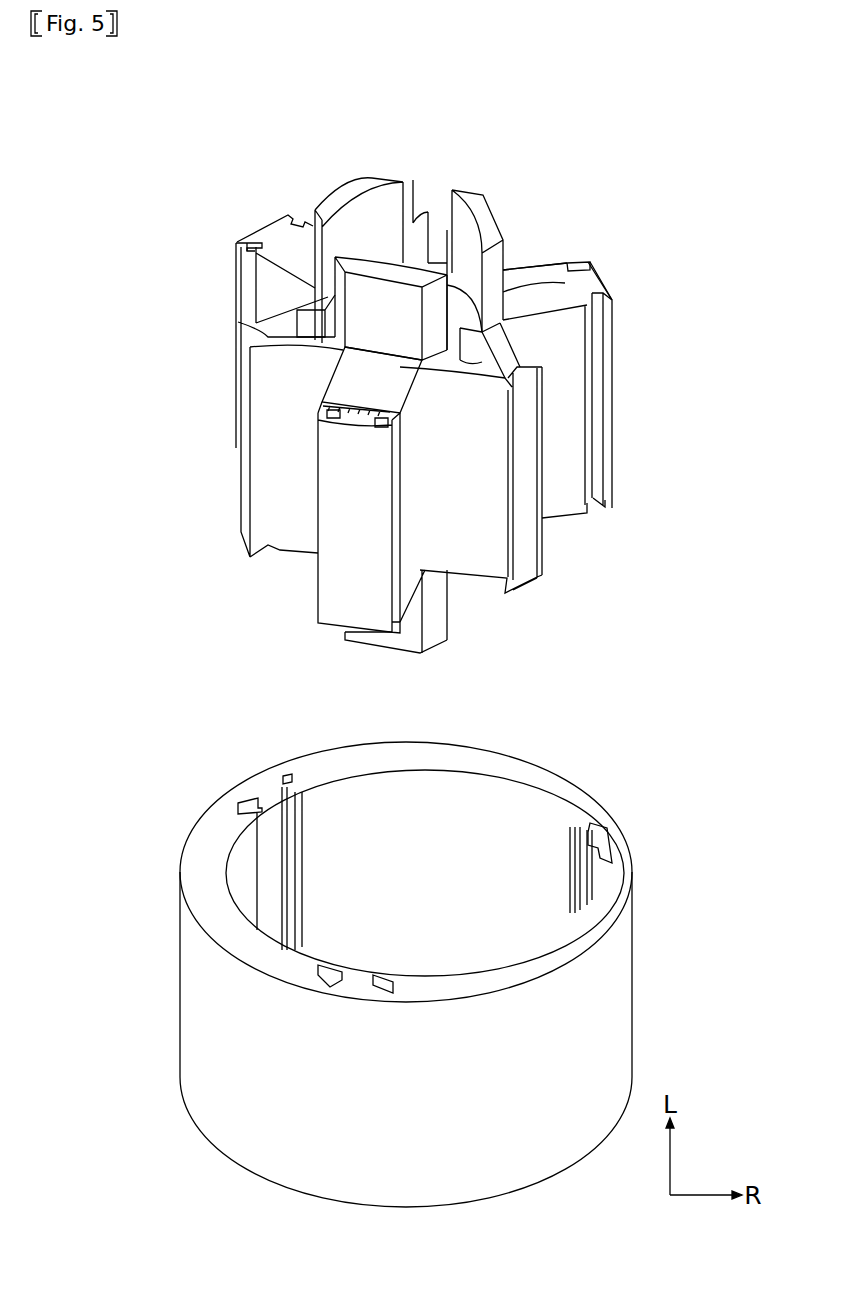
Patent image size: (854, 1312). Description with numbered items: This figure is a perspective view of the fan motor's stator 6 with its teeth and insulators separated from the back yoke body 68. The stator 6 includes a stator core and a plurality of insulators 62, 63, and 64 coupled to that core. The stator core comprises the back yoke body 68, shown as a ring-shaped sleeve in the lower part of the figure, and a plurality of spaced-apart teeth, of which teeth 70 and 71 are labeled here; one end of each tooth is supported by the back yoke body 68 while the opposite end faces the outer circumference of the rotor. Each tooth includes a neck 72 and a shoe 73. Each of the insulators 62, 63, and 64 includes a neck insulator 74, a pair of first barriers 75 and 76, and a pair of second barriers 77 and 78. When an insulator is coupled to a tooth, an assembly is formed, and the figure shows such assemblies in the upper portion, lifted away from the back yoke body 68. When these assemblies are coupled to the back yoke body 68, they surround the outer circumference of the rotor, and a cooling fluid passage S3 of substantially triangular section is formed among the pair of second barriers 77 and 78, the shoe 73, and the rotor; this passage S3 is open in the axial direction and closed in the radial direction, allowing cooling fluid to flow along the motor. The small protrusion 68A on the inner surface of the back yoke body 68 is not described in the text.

The stator 6 is at (572, 168).
The insulator 62 is at (565, 263).
The insulator 63 is at (328, 300).
The insulator 64 is at (410, 598).
The back yoke body 68 is at (608, 1038).
The sleeve protrusion 68A is at (603, 837).
The tooth 70 is at (668, 259).
The tooth 71 is at (243, 158).
The neck 72 is at (270, 228).
The shoe 73 is at (323, 306).
The neck insulator 74 is at (295, 262).
The first barrier 75 is at (360, 187).
The first barrier 76 is at (438, 605).
The second barrier 77 is at (270, 360).
The second barrier 78 is at (267, 327).
The cooling fluid passage S3 is at (427, 270).